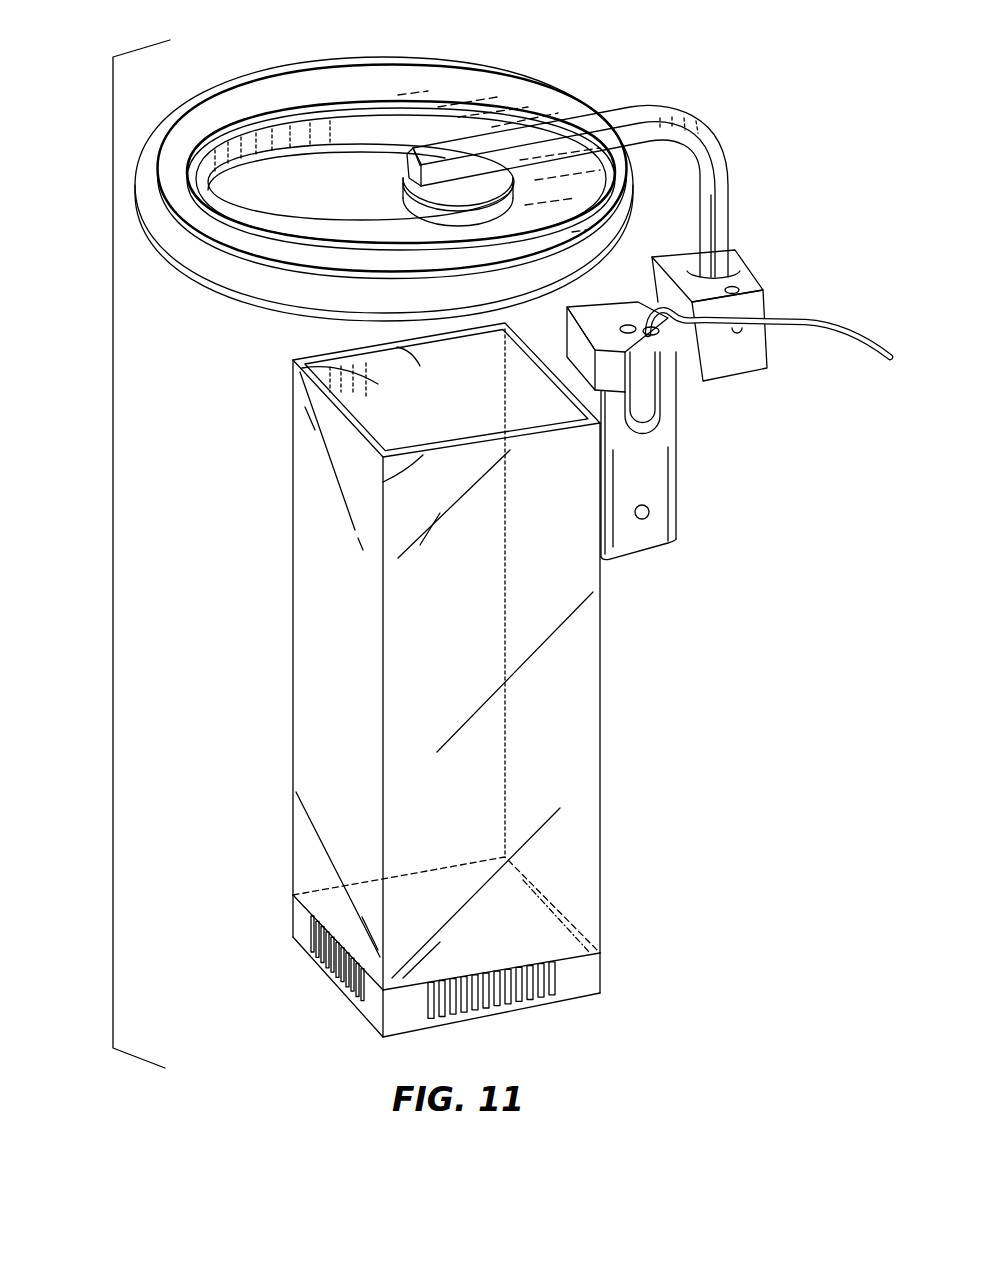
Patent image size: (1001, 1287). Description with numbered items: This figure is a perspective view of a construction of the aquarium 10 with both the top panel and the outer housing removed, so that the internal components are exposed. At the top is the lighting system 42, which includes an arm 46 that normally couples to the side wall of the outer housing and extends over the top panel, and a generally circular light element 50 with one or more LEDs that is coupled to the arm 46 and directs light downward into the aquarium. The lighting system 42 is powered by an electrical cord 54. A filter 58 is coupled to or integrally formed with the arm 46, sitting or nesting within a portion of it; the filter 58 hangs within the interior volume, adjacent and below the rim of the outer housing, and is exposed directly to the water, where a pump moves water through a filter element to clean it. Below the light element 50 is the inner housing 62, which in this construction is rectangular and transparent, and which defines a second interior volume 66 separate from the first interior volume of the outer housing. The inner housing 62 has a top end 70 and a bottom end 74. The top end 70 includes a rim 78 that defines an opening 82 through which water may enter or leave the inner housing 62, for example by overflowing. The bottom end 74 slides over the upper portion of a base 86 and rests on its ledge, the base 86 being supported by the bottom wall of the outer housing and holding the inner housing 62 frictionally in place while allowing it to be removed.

The aquarium 10 is at (83, 122).
The lighting system 42 is at (563, 90).
The light element 50 is at (283, 90).
The arm 46 is at (647, 118).
The electrical cord 54 is at (832, 328).
The filter 58 is at (645, 385).
The inner housing 62 is at (424, 681).
The second interior volume 66 is at (293, 360).
The top end 70 is at (308, 458).
The bottom end 74 is at (308, 862).
The rim 78 is at (420, 456).
The opening 82 is at (417, 363).
The base 86 is at (577, 987).